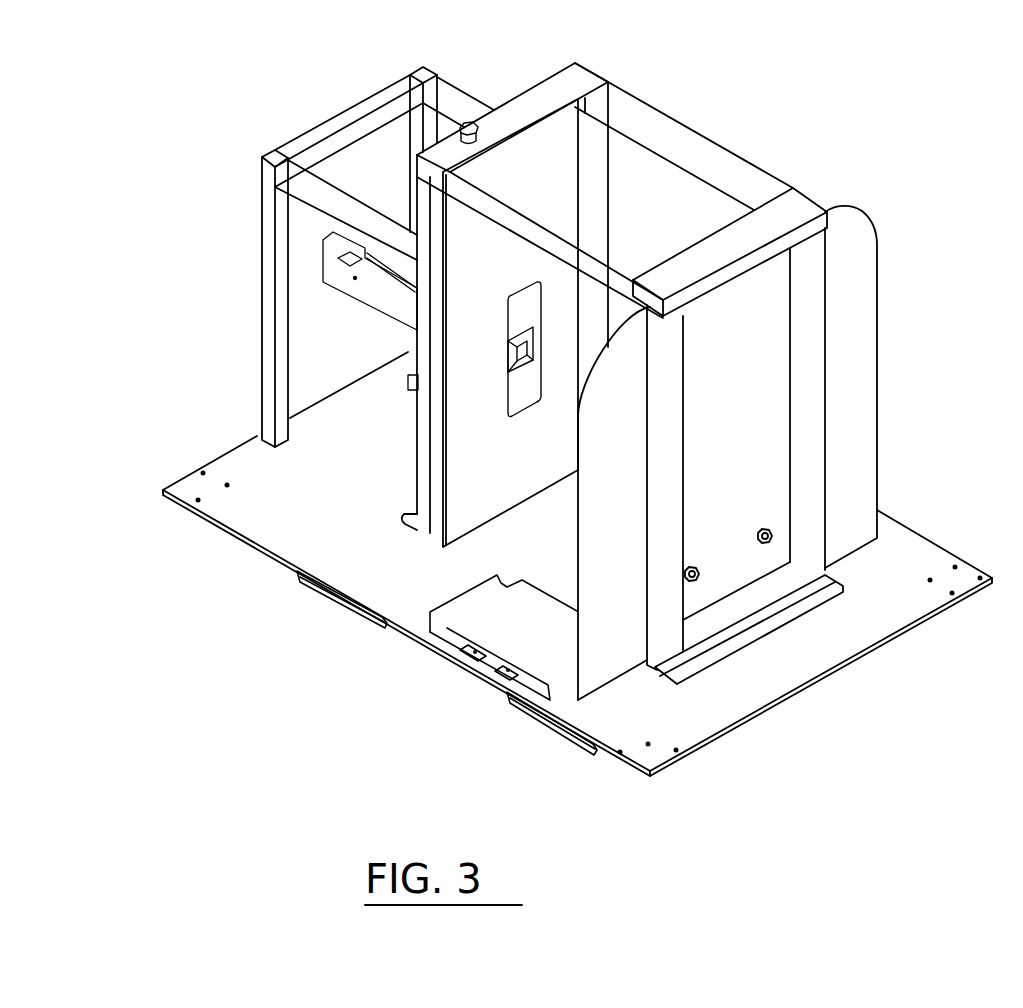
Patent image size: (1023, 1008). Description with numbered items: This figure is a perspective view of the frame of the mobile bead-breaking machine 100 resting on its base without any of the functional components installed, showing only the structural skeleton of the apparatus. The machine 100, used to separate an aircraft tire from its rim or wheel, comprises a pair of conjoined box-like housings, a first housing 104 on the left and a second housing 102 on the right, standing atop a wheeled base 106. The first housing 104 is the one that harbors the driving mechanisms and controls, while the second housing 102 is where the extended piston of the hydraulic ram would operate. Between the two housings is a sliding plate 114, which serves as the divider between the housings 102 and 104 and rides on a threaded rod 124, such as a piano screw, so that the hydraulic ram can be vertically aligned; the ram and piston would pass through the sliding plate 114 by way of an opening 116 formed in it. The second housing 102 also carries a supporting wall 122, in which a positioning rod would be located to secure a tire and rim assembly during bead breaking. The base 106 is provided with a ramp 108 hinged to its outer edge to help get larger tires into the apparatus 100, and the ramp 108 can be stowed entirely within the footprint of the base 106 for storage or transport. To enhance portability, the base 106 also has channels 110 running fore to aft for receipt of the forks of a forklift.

The mobile bead-breaking machine 100 is at (530, 403).
The second housing 102 is at (655, 130).
The first housing 104 is at (347, 128).
The wheeled base 106 is at (165, 489).
The ramp 108 is at (540, 640).
The channels 110 is at (323, 597).
The sliding plate 114 is at (510, 323).
The opening 116 is at (506, 352).
The supporting wall 122 is at (748, 405).
The threaded rod 124 is at (470, 120).